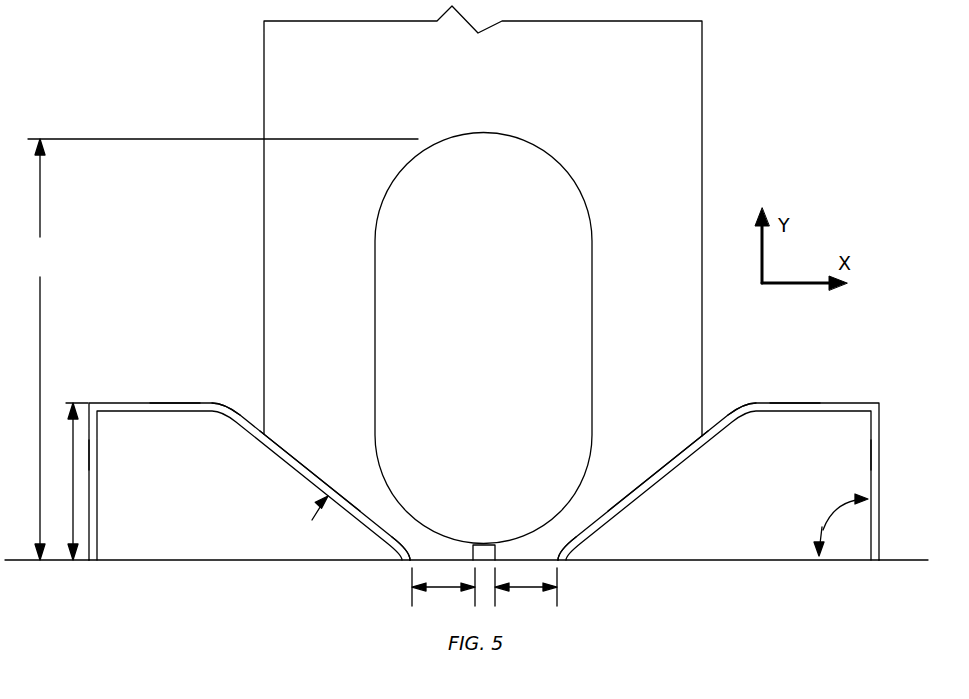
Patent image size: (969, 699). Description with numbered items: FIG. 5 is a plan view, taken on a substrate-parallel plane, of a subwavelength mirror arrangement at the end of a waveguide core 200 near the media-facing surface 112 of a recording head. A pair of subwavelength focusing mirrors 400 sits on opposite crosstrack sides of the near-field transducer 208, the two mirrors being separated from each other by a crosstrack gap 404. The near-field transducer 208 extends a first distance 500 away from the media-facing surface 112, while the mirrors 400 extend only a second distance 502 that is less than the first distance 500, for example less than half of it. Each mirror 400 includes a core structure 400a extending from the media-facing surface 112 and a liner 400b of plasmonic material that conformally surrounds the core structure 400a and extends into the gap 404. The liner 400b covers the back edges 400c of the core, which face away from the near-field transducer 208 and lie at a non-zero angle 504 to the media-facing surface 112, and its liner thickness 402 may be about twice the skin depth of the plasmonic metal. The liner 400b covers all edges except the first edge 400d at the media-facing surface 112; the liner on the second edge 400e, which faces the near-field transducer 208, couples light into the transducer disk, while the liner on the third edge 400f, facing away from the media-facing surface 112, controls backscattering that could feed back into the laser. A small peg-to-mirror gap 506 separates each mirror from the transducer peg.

The media-facing surface 112 is at (924, 562).
The waveguide core 200 is at (264, 110).
The near-field transducer 208 is at (310, 285).
The subwavelength focusing mirror 400 is at (115, 342).
The core structure 400a is at (273, 540).
The liner 400b is at (237, 404).
The back edge 400c is at (89, 452).
The first edge 400d is at (156, 562).
The second edge 400e is at (307, 482).
The third edge 400f is at (183, 411).
The liner thickness 402 is at (360, 471).
The crosstrack gap 404 is at (442, 552).
The first distance 500 is at (220, 349).
The second distance 502 is at (73, 501).
The non-zero angle 504 is at (823, 530).
The peg-to-mirror gap 506 is at (484, 593).